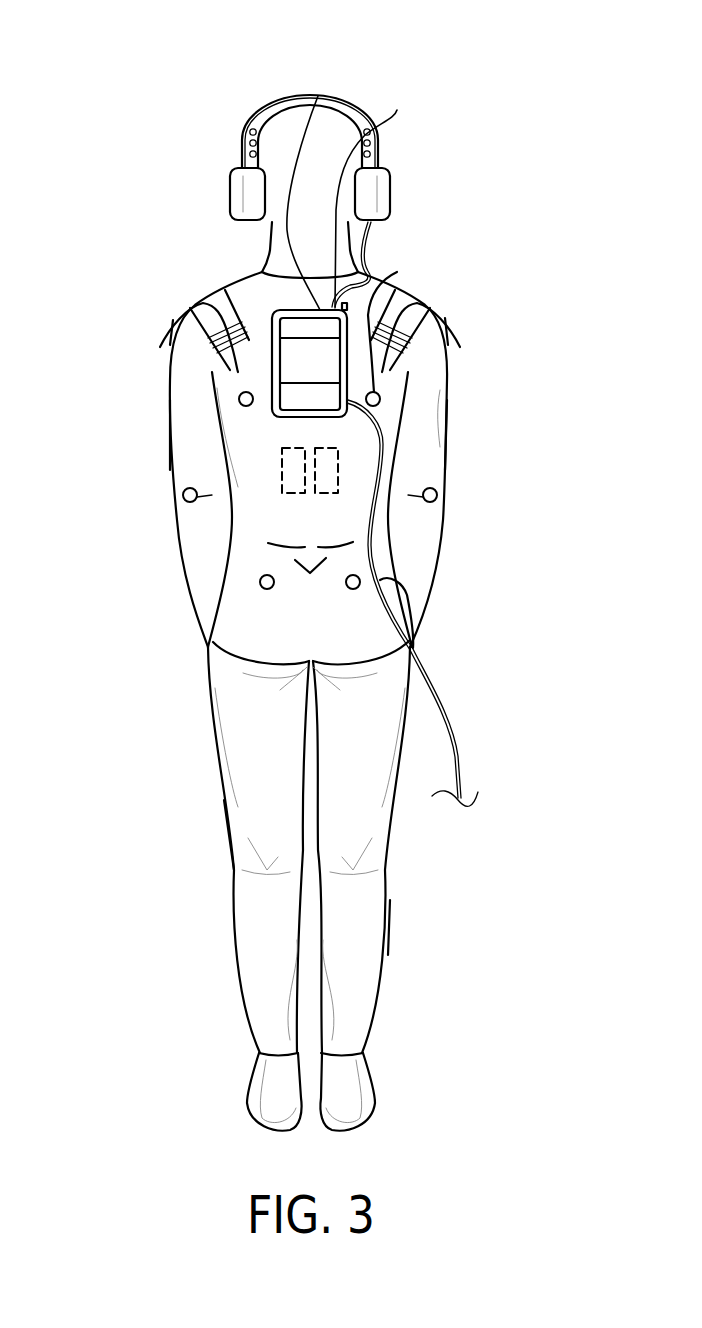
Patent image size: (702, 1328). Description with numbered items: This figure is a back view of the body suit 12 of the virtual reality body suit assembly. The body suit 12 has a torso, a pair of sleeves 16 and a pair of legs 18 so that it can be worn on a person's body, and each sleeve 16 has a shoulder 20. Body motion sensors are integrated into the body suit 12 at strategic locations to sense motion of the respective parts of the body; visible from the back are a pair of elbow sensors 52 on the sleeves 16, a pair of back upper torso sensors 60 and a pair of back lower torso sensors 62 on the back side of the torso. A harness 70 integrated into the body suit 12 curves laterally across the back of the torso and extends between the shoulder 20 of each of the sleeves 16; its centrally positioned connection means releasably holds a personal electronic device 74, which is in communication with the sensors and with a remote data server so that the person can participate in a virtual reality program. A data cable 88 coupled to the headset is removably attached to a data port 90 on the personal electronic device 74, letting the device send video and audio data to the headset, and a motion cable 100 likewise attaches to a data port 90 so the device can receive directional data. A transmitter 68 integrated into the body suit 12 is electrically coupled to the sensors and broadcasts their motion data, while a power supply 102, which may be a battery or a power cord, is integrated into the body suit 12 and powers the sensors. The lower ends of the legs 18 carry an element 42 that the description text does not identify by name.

The body suit 12 is at (142, 352).
The sleeves 16 is at (152, 441).
The legs 18 is at (207, 798).
The shoulder 20 is at (173, 318).
The foot portion 42 is at (266, 1108).
The elbow sensors 52 is at (183, 497).
The back upper torso sensors 60 is at (195, 305).
The back lower torso sensors 62 is at (264, 587).
The transmitter 68 is at (283, 448).
The harness 70 is at (246, 392).
The personal electronic device 74 is at (309, 308).
The data cable 88 is at (380, 275).
The data port 90 is at (397, 110).
The motion cable 100 is at (452, 733).
The power supply 102 is at (339, 452).